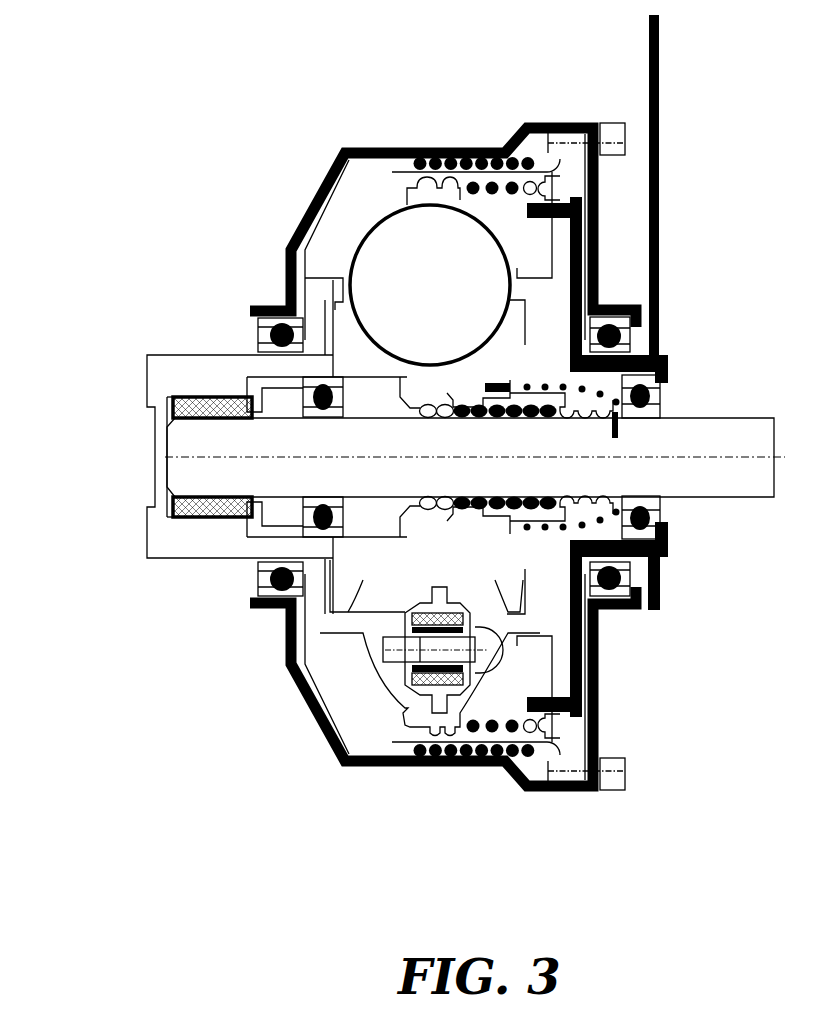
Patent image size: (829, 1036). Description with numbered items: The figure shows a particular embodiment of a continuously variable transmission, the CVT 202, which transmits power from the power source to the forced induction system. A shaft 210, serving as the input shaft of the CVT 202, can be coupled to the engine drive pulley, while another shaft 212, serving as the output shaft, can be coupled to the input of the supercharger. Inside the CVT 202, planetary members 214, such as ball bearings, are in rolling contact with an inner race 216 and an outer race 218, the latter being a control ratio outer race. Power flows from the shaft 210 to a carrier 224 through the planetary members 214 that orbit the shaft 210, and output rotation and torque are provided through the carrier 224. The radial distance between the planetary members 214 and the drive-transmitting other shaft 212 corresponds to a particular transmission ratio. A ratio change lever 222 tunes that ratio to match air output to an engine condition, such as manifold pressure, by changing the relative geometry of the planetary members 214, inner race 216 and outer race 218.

The continuously variable transmission 202 is at (124, 98).
The shaft 210 is at (752, 416).
The other shaft 212 is at (186, 353).
The planetary members 214 is at (452, 303).
The inner race 216 is at (335, 317).
The outer race 218 is at (350, 188).
The ratio change lever 222 is at (649, 80).
The carrier 224 is at (250, 556).